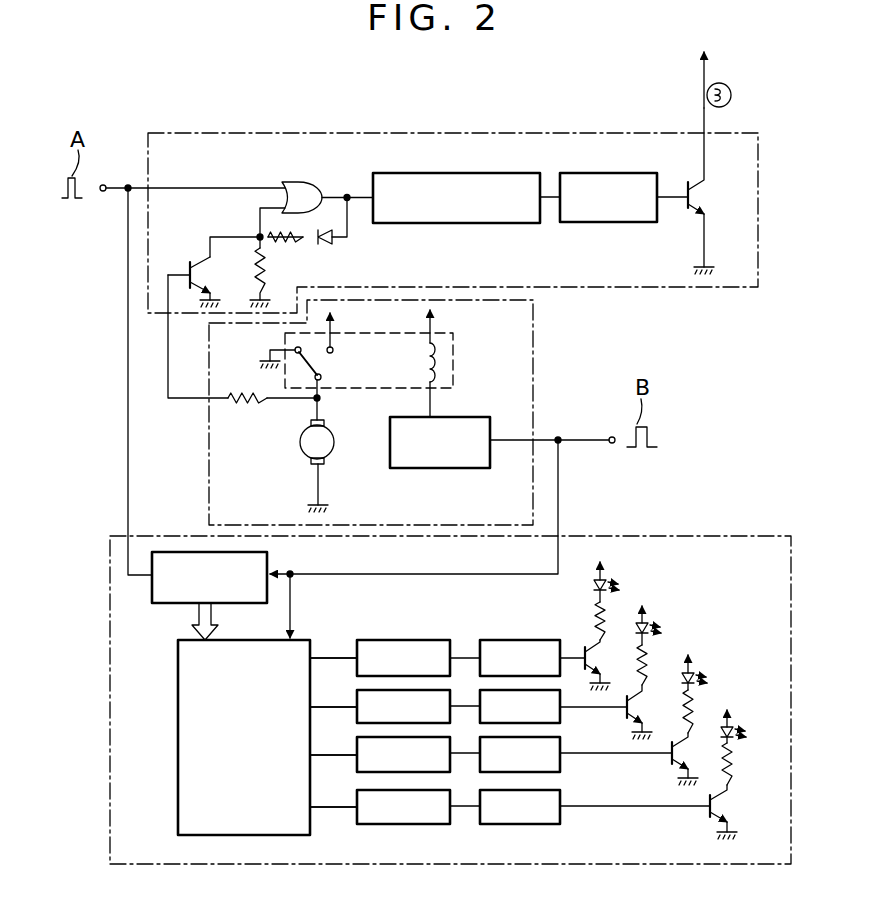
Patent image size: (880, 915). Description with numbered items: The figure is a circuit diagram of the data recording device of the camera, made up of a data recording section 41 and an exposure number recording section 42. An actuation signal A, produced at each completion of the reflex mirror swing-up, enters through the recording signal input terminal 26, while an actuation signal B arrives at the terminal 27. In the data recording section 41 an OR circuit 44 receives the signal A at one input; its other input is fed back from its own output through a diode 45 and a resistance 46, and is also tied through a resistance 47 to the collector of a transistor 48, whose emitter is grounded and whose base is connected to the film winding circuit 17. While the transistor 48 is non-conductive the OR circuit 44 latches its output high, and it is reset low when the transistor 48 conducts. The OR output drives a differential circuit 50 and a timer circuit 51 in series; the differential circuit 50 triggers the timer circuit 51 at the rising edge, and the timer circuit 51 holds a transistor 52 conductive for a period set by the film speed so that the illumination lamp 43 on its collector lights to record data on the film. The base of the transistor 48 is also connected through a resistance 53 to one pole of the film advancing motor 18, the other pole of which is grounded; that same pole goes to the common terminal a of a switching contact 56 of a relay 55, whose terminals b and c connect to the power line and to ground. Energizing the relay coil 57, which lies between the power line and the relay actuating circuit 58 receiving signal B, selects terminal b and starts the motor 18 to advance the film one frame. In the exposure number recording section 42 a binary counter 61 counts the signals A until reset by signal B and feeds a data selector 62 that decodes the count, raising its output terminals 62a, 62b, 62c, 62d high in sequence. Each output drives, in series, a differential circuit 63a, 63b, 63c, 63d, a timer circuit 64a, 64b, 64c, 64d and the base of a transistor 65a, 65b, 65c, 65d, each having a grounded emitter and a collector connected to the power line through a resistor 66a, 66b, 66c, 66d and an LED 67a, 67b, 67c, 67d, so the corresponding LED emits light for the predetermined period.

The film winding circuit 17 is at (209, 443).
The film advancing motor 18 is at (333, 452).
The recording signal input terminal 26 is at (103, 193).
The terminal 27 is at (612, 444).
The data recording section 41 is at (253, 131).
The exposure number recording section 42 is at (690, 532).
The illumination lamp 43 is at (722, 84).
The OR circuit 44 is at (298, 181).
The diode 45 is at (327, 243).
The resistance 46 is at (287, 243).
The resistance 47 is at (257, 267).
The transistor 48 is at (195, 257).
The differential circuit 50 is at (452, 223).
The timer circuit 51 is at (607, 223).
The transistor 52 is at (708, 198).
The resistance 53 is at (247, 407).
The relay 55 is at (455, 367).
The switching contact 56 is at (329, 361).
The relay coil 57 is at (430, 367).
The relay actuating circuit 58 is at (435, 470).
The binary counter 61 is at (268, 562).
The data selector 62 is at (178, 687).
The first output terminal 62a is at (336, 656).
The output terminal 62b is at (334, 705).
The output terminal 62c is at (334, 753).
The output terminal 62d is at (334, 805).
The differential circuit 63a is at (403, 658).
The differential circuit 63b is at (403, 706).
The differential circuit 63c is at (403, 754).
The differential circuit 63d is at (403, 807).
The timer circuit 64a is at (520, 658).
The timer circuit 64b is at (520, 706).
The timer circuit 64c is at (520, 754).
The timer circuit 64d is at (520, 807).
The transistor 65a is at (590, 648).
The transistor 65b is at (634, 714).
The transistor 65c is at (678, 763).
The transistor 65d is at (716, 815).
The resistor 66a is at (606, 608).
The resistor 66b is at (648, 655).
The resistor 66c is at (694, 700).
The resistor 66d is at (733, 762).
The LED 67a is at (606, 578).
The LED 67b is at (649, 622).
The LED 67c is at (695, 672).
The LED 67d is at (735, 726).